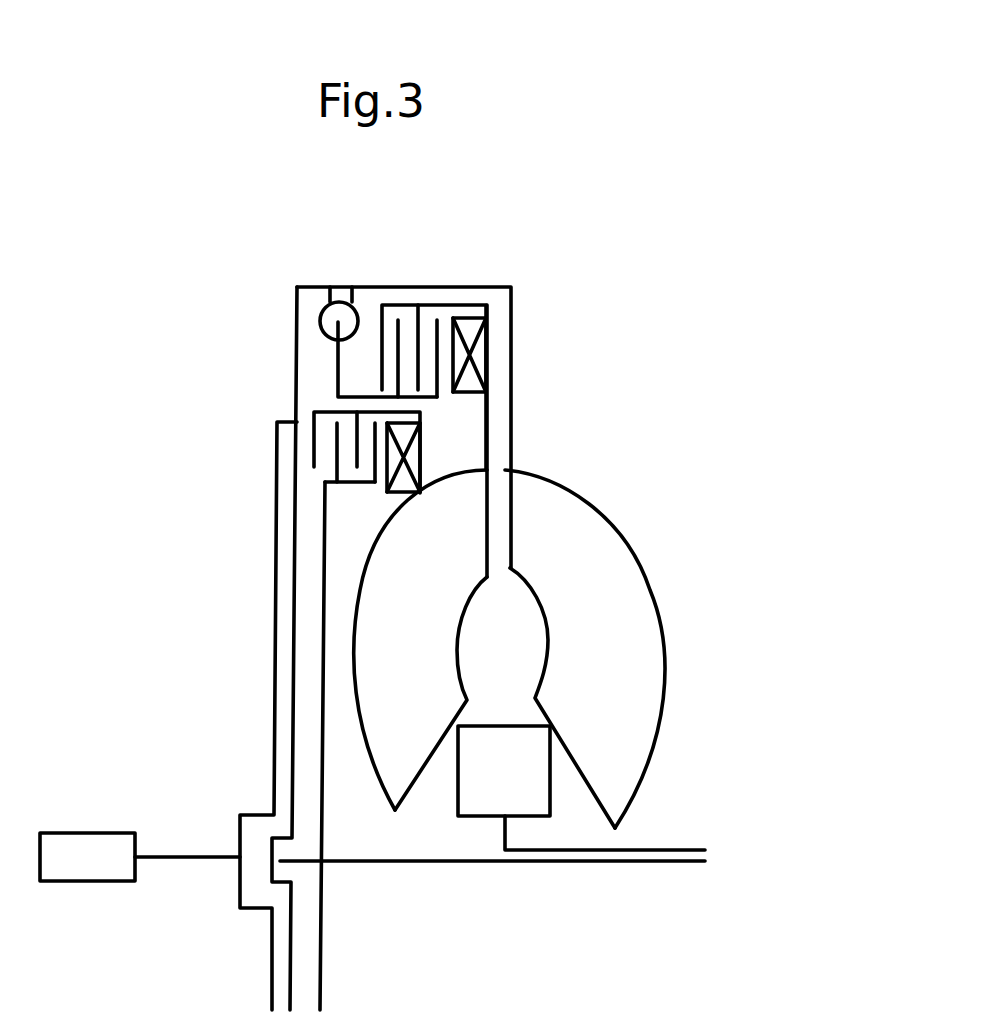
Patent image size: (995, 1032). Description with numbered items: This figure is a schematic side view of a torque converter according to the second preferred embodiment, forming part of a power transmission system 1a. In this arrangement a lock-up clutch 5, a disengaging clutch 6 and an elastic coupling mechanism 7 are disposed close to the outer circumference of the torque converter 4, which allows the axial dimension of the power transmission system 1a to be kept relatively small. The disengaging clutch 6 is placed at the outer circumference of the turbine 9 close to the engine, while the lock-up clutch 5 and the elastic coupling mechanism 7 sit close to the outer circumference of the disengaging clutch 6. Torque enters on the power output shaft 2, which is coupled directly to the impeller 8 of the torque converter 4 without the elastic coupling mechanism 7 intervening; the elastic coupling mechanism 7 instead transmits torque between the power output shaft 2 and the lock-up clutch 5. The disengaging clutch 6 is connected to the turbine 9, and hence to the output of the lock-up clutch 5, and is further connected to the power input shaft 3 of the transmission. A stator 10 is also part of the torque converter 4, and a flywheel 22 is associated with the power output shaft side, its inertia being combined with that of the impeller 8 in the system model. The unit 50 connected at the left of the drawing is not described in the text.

The power transmission system 1a is at (738, 330).
The power output shaft 2 is at (175, 857).
The power input shaft 3 is at (653, 865).
The torque converter 4 is at (668, 558).
The lock-up clutch 5 is at (497, 318).
The disengaging clutch 6 is at (313, 442).
The elastic coupling mechanism 7 is at (298, 307).
The impeller 8 is at (568, 523).
The turbine 9 is at (380, 647).
The stator 10 is at (518, 773).
The flywheel 22 is at (273, 740).
The power supply unit 50 is at (90, 883).